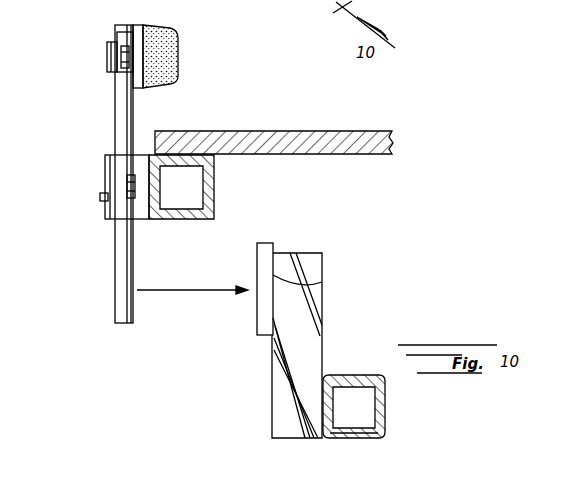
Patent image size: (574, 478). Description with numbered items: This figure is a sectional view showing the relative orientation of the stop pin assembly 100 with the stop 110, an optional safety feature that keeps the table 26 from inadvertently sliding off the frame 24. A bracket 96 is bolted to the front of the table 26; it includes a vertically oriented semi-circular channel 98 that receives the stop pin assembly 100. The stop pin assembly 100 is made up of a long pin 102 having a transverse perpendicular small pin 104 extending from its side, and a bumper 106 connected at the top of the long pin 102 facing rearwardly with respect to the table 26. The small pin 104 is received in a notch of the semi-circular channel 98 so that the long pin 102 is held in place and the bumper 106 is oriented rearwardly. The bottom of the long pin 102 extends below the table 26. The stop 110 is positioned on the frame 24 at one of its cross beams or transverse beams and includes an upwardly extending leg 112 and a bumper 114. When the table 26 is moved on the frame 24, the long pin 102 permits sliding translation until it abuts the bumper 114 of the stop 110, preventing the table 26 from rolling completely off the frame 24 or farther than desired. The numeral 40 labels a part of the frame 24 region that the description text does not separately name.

The stop pin assembly 100 is at (180, 18).
The bumper 106 is at (180, 43).
The table 26 is at (222, 130).
The bracket 96 is at (107, 158).
The semi-circular channel 98 is at (109, 175).
The small pin 104 is at (100, 197).
The long pin 102 is at (118, 235).
The stop 110 is at (325, 331).
The upwardly extending leg 112 is at (318, 268).
The bumper 114 is at (320, 283).
The frame 24 is at (388, 415).
The frame bottom member 40 is at (384, 435).